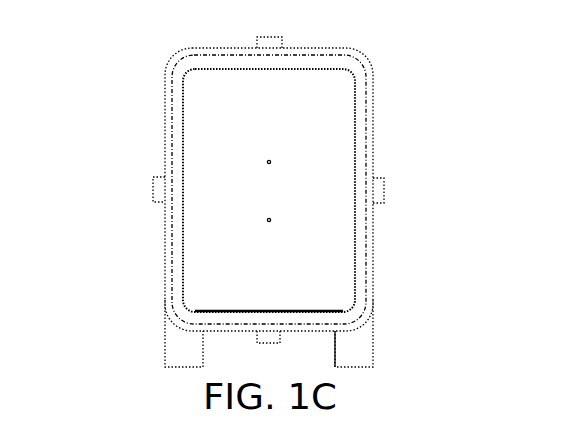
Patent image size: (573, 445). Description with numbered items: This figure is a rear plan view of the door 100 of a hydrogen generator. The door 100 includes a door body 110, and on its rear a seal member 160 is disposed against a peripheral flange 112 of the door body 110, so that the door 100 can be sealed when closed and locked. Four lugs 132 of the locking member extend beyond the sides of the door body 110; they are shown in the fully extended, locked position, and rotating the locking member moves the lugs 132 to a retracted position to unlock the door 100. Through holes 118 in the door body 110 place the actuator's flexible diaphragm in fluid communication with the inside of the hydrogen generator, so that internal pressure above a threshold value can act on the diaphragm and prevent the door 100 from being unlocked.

The door 100 is at (263, 191).
The door body 110 is at (165, 235).
The peripheral flange 112 is at (370, 160).
The through holes 118 is at (270, 162).
The lugs 132 is at (282, 37).
The seal member 160 is at (362, 103).